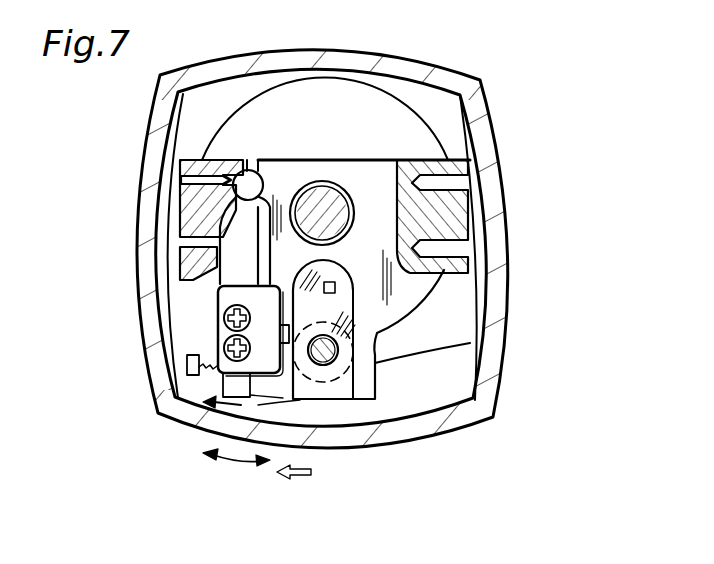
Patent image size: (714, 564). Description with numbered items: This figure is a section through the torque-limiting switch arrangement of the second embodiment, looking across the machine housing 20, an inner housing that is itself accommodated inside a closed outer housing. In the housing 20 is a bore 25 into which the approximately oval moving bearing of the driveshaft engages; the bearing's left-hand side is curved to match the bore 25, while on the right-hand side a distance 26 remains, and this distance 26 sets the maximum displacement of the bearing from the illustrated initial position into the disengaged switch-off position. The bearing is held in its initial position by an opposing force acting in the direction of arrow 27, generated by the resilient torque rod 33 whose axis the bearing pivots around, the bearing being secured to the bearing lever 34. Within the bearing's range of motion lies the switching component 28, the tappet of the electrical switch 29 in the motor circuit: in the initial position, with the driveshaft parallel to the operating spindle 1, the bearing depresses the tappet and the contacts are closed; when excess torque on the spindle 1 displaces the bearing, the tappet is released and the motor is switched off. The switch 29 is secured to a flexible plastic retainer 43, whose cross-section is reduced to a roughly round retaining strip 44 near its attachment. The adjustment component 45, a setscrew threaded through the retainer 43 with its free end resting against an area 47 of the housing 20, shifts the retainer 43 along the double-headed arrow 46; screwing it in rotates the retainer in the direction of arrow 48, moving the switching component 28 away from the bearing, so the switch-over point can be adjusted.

The operating spindle 1 is at (340, 195).
The machine housing 20 is at (378, 158).
The retaining strip 44 is at (198, 198).
The flexible retainer 43 is at (243, 274).
The electrical switch 29 is at (219, 322).
The adjustment component 45 is at (187, 366).
The arrow 48 is at (236, 403).
The switching component 28 is at (265, 416).
The area on inner housing 47 is at (283, 398).
The double-headed arrow 46 is at (225, 460).
The resilient torque rod 33 is at (337, 295).
The bearing lever 34 is at (345, 330).
The bore 25 is at (332, 378).
The distance 26 is at (352, 388).
The arrow 27 is at (299, 479).